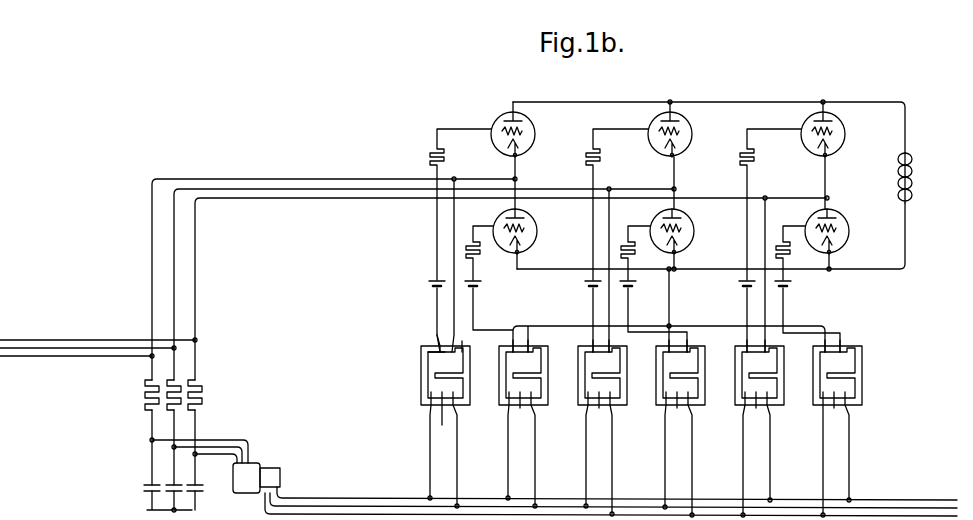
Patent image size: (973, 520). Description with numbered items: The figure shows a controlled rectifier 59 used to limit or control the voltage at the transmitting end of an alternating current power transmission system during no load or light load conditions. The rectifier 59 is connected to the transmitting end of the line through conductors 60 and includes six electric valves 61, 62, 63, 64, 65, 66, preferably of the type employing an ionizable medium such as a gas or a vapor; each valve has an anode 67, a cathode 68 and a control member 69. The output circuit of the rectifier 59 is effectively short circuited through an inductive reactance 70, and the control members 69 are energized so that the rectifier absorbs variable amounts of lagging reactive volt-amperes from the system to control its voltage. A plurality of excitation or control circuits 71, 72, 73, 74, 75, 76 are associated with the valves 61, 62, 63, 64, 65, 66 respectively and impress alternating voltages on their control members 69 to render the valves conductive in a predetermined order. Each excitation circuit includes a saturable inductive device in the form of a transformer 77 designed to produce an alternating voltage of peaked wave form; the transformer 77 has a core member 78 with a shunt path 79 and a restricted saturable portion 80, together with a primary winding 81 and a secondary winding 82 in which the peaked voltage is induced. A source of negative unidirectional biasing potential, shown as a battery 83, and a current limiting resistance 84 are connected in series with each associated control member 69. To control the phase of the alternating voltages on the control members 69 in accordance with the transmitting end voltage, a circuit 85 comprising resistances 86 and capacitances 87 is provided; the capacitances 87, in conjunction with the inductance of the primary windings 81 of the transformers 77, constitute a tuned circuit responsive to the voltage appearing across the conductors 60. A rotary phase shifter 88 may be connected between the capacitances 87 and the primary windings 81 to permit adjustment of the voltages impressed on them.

The controlled rectifier 59 is at (688, 89).
The conductors 60 is at (10, 340).
The electric valve 61 is at (518, 130).
The electric valve 62 is at (527, 231).
The electric valve 63 is at (684, 129).
The electric valve 64 is at (685, 231).
The electric valve 65 is at (838, 129).
The electric valve 66 is at (840, 231).
The anode 67 is at (503, 107).
The cathode 68 is at (498, 152).
The control member 69 is at (529, 141).
The inductive reactance 70 is at (899, 176).
The excitation circuit 71 is at (433, 410).
The excitation circuit 72 is at (503, 447).
The excitation circuit 73 is at (582, 447).
The excitation circuit 74 is at (660, 450).
The excitation circuit 75 is at (739, 450).
The excitation circuit 76 is at (816, 450).
The transformer 77 is at (408, 372).
The core member 78 is at (425, 347).
The shunt path 79 is at (445, 373).
The restricted saturable portion 80 is at (468, 342).
The primary winding 81 is at (442, 416).
The secondary winding 82 is at (443, 346).
The battery 83 is at (428, 283).
The current limiting resistance 84 is at (430, 153).
The circuit 85 is at (150, 426).
The resistance 86 is at (194, 380).
The capacitance 87 is at (194, 492).
The rotary phase shifter 88 is at (272, 468).